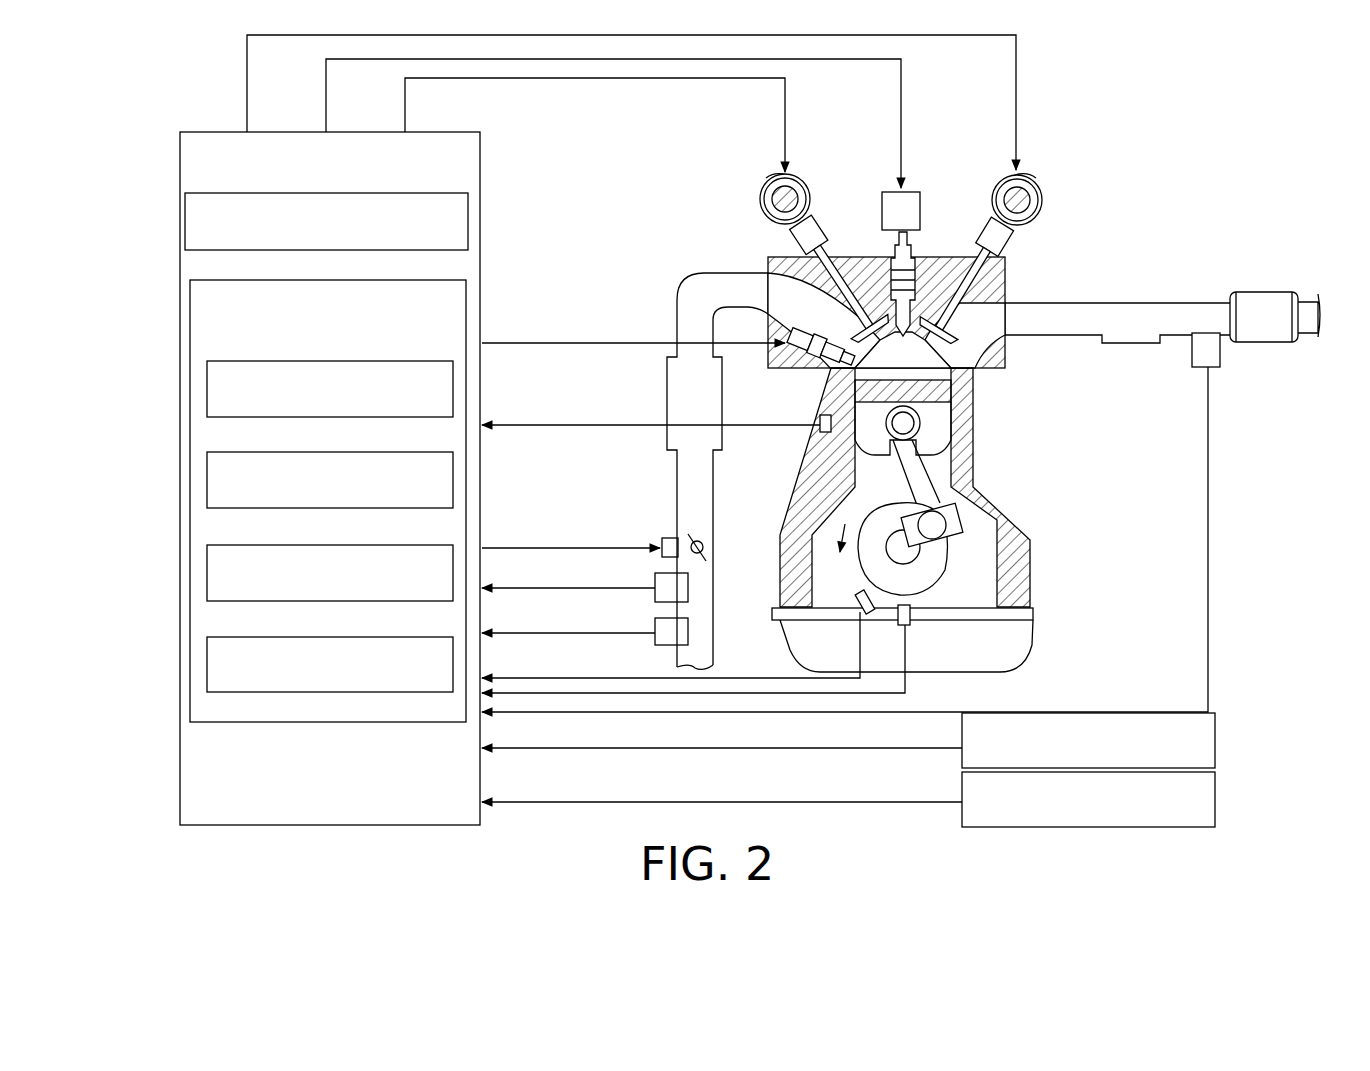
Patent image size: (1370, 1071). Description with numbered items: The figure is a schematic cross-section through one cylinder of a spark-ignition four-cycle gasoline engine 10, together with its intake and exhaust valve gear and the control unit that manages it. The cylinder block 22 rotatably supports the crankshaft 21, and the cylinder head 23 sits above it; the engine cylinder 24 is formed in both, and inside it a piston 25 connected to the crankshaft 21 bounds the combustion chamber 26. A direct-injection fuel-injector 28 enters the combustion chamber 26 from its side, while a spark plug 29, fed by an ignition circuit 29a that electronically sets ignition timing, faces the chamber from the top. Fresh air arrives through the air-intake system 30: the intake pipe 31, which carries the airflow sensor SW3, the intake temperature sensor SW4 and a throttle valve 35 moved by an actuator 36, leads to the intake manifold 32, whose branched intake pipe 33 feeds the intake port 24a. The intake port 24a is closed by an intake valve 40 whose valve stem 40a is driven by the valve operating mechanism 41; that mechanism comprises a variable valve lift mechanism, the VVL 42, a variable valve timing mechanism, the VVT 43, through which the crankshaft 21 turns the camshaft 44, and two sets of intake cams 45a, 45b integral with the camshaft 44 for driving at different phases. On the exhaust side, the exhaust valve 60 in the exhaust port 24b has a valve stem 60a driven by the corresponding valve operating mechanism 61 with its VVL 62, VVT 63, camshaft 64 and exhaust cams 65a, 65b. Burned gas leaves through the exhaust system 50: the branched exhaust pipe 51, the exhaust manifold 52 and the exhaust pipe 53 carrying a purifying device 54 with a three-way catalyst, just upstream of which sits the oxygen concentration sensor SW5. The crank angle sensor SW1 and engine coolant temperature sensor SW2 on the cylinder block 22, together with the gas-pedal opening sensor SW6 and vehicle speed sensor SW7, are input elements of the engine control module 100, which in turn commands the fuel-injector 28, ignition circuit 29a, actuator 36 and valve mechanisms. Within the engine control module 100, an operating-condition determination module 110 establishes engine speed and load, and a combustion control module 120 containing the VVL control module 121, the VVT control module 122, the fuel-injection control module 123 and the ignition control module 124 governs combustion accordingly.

The engine 10 is at (1178, 207).
The engine control module 100 is at (215, 131).
The operating-condition determination module 110 is at (188, 212).
The combustion control module 120 is at (190, 303).
The VVL control module 121 is at (207, 392).
The VVT control module 122 is at (207, 482).
The fuel-injection control module 123 is at (207, 574).
The ignition control module 124 is at (207, 664).
The crankshaft 21 is at (905, 553).
The cylinder block 22 is at (998, 506).
The cylinder head 23 is at (1007, 280).
The engine cylinder 24 is at (862, 455).
The intake port 24a is at (778, 292).
The exhaust port 24b is at (995, 350).
The piston 25 is at (862, 388).
The combustion chamber 26 is at (973, 410).
The fuel-injector 28 is at (792, 364).
The spark plug 29 is at (920, 290).
The ignition circuit 29a is at (912, 192).
The air-intake system 30 is at (600, 452).
The intake pipe 31 is at (705, 656).
The intake manifold 32 is at (730, 445).
The branched intake pipe 33 is at (750, 308).
The throttle valve 35 is at (708, 552).
The actuator 36 is at (664, 538).
The intake valve 40 is at (915, 358).
The valve stem 40a is at (825, 272).
The valve operating mechanism 41 is at (705, 165).
The VVL 42 is at (820, 210).
The VVT 43 is at (768, 229).
The camshaft 44 is at (780, 200).
The intake cam 45a is at (768, 174).
The intake cam 45b is at (766, 183).
The exhaust system 50 is at (1118, 432).
The branched exhaust pipe 51 is at (1075, 343).
The exhaust manifold 52 is at (1128, 348).
The exhaust pipe 53 is at (1216, 302).
The purifying device 54 is at (1270, 292).
The exhaust valve 60 is at (948, 300).
The valve stem 60a is at (1008, 321).
The valve operating mechanism 61 is at (1098, 165).
The VVL 62 is at (1033, 238).
The VVT 63 is at (1040, 215).
The camshaft 64 is at (1030, 200).
The exhaust cam 65a is at (1035, 178).
The exhaust cam 65b is at (1040, 186).
The crank angle sensor SW1 is at (870, 606).
The engine coolant temperature sensor SW2 is at (820, 425).
The airflow sensor SW3 is at (662, 646).
The intake temperature sensor SW4 is at (662, 603).
The oxygen concentration sensor SW5 is at (1210, 368).
The gas-pedal opening sensor SW6 is at (1215, 740).
The vehicle speed sensor SW7 is at (1215, 796).